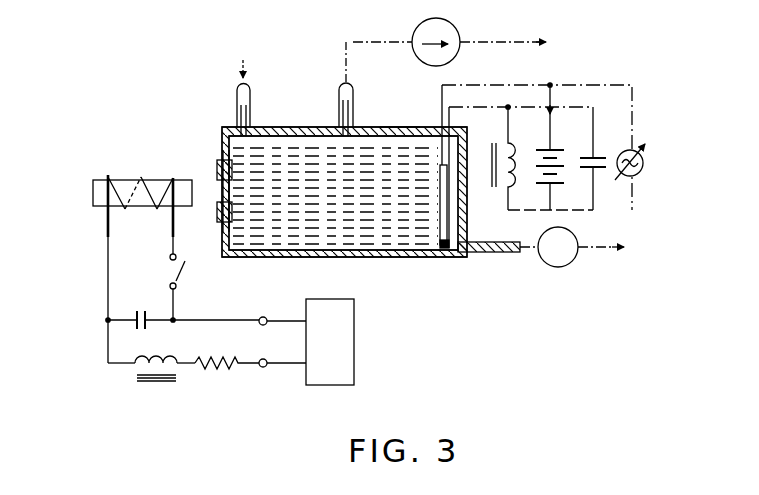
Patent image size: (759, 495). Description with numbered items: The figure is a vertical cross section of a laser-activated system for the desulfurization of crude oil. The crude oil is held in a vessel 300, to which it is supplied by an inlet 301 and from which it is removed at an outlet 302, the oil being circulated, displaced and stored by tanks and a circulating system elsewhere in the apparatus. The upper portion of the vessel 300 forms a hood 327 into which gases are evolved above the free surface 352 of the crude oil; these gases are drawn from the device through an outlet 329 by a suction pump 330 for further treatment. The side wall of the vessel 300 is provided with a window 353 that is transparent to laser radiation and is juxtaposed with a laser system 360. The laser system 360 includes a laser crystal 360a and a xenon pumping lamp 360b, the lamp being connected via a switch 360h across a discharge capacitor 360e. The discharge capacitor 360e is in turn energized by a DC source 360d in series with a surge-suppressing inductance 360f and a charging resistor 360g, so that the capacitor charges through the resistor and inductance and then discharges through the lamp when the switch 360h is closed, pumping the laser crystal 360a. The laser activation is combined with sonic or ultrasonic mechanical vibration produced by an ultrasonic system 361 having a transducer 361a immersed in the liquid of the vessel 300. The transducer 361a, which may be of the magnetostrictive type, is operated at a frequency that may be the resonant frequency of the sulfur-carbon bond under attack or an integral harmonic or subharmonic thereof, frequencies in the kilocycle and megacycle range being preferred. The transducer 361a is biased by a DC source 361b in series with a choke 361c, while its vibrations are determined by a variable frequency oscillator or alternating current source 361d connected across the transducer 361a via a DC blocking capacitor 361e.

The vessel 300 is at (280, 261).
The inlet 301 is at (248, 96).
The outlet 302 is at (480, 253).
The hood 327 is at (385, 137).
The outlet 329 is at (341, 82).
The suction pump 330 is at (459, 34).
The free surface 352 is at (298, 160).
The window 353 is at (222, 195).
The laser system 360 is at (102, 199).
The laser crystal 360a is at (94, 182).
The xenon pumping lamp 360b is at (130, 188).
The DC source 360d is at (354, 382).
The discharge capacitor 360e is at (130, 320).
The surge-suppressing inductance 360f is at (178, 374).
The charging resistor 360g is at (194, 338).
The switch 360h is at (178, 283).
The ultrasonic system 361 is at (637, 81).
The transducer 361a is at (441, 258).
The DC source 361b is at (552, 145).
The choke 361c is at (501, 190).
The variable frequency oscillator 361d is at (648, 172).
The DC blocking capacitor 361e is at (628, 137).